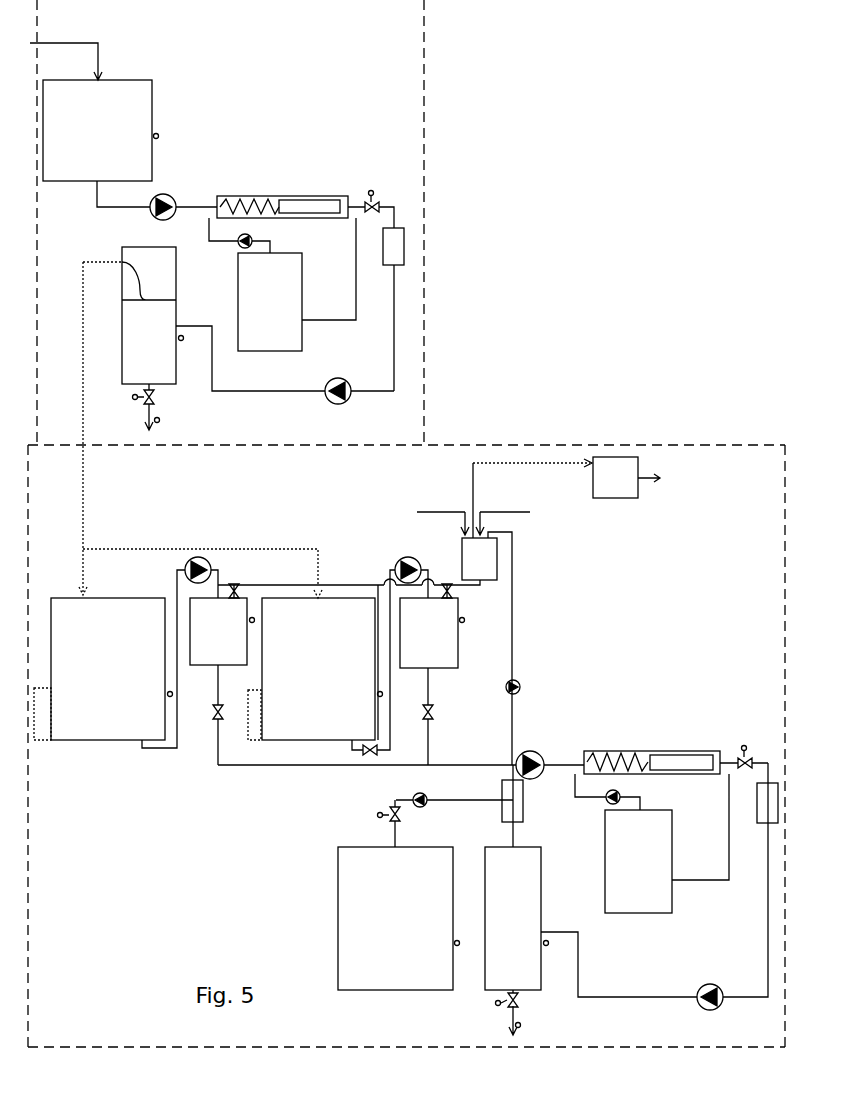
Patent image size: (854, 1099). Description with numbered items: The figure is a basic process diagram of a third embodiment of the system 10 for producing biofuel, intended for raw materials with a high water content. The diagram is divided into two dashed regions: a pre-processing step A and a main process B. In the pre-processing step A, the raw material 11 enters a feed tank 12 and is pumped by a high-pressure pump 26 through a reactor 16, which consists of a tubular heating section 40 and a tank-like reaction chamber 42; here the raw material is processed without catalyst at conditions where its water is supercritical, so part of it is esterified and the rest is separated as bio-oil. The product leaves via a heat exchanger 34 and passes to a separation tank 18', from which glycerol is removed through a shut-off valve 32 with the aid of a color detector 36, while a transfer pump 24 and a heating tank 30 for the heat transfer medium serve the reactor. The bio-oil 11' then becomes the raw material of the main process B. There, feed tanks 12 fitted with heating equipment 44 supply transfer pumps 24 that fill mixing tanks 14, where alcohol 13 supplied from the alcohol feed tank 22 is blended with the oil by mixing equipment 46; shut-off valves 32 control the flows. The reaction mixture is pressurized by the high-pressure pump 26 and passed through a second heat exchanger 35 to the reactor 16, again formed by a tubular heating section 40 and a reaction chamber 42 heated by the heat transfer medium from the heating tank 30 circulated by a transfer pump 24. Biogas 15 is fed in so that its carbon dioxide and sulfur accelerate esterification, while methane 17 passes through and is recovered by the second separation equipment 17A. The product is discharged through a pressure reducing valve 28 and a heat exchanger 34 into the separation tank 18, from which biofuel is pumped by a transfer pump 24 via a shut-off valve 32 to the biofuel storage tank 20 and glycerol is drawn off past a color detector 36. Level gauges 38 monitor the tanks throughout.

The system 10 is at (570, 170).
The raw material 11 is at (189, 430).
The bio-oil 11' is at (68, 41).
The feed tank 12 is at (219, 417).
The alcohol 13 is at (458, 512).
The mixing tank 14 is at (324, 681).
The biogas 15 is at (500, 512).
The reactor 16 is at (276, 196).
The methane 17 is at (472, 482).
The second separation equipment 17A is at (610, 476).
The separation tank 18 is at (626, 880).
The separation tank 18' is at (258, 338).
The biofuel storage tank 20 is at (425, 895).
The alcohol feed tank 22 is at (486, 638).
The transfer pump 24 is at (340, 382).
The high-pressure pump 26 is at (168, 195).
The pressure reducing valve 28 is at (755, 757).
The heating tank for the heat transfer medium 30 is at (455, 583).
The shut-off valve 32 is at (133, 398).
The heat exchanger 34 is at (396, 250).
The second heat exchanger 35 is at (520, 808).
The color detector 36 is at (160, 420).
The level gauge 38 is at (173, 697).
The tubular heating section 40 is at (232, 200).
The reaction chamber 42 is at (325, 207).
The heating equipment 44 is at (42, 726).
The mixing equipment 46 is at (188, 518).
The pre-processing step A is at (424, 117).
The main process B is at (655, 445).